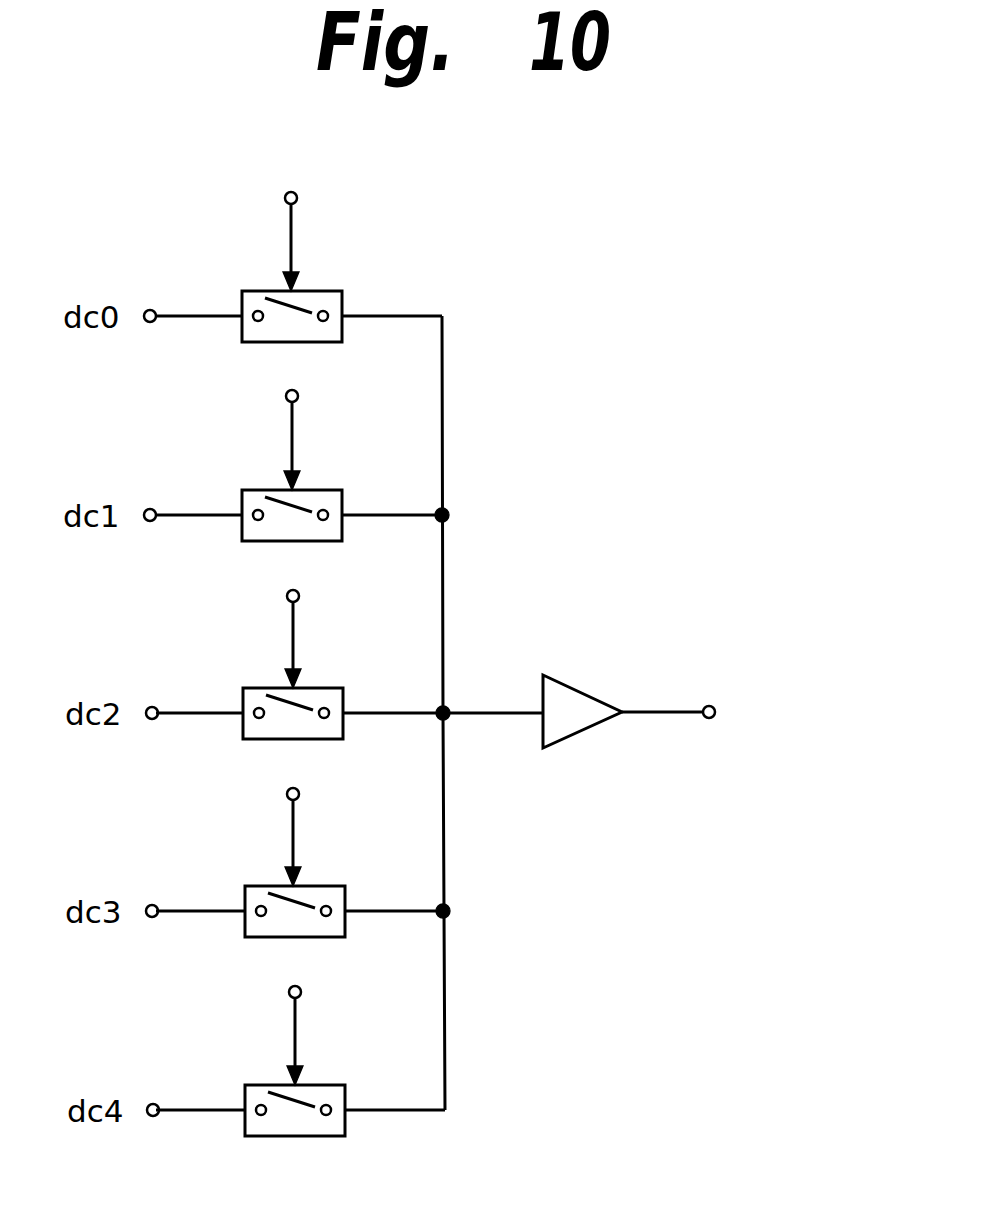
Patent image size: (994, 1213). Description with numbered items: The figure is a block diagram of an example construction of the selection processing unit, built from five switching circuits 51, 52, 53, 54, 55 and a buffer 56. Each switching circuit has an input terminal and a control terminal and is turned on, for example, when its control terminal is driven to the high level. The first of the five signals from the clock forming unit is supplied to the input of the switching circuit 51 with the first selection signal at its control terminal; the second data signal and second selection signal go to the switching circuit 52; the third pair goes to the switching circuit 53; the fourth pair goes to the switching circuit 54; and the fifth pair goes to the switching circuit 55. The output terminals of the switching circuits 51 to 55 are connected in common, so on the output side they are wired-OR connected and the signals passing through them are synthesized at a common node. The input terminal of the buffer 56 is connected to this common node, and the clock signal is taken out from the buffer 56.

The switching circuit 51 is at (313, 291).
The switching circuit 52 is at (315, 490).
The switching circuit 53 is at (316, 688).
The switching circuit 54 is at (317, 886).
The switching circuit 55 is at (318, 1085).
The buffer 56 is at (583, 693).